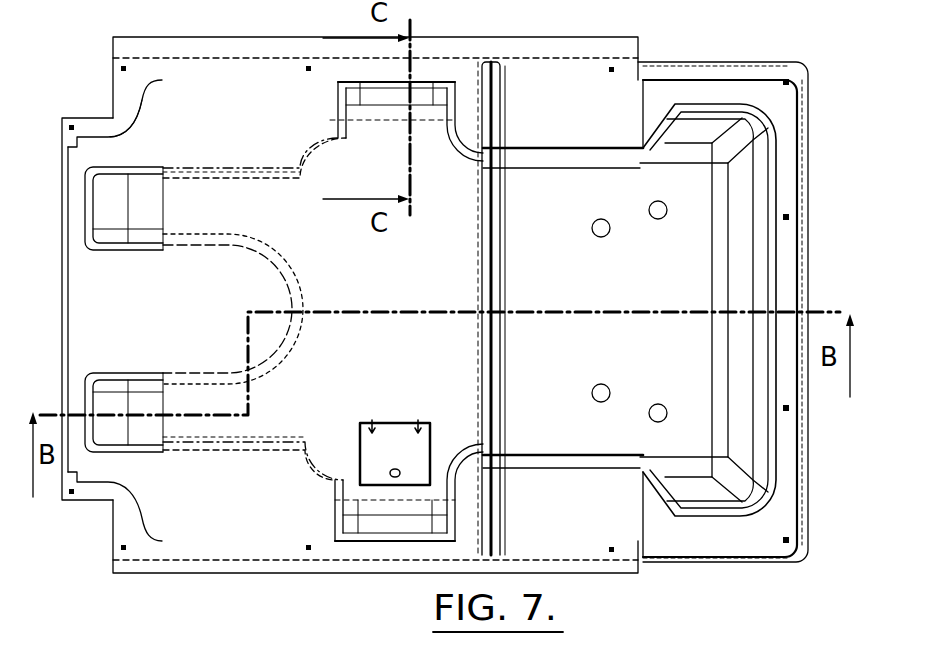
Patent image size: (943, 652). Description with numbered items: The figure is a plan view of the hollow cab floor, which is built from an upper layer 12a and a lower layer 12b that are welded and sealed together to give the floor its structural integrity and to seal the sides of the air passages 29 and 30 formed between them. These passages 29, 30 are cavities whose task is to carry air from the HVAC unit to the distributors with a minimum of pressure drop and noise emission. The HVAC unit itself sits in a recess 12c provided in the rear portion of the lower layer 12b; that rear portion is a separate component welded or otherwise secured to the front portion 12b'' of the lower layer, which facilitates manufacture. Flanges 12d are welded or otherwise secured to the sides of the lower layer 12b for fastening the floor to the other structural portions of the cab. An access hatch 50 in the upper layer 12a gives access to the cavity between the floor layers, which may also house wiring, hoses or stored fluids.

The upper layer 12a is at (160, 295).
The lower layer 12b is at (723, 330).
The front portion of the lower layer 12b'' is at (91, 336).
The recess 12c is at (665, 354).
The flanges 12d is at (201, 47).
The passage 29 is at (205, 208).
The passage 30 is at (372, 147).
The access hatch 50 is at (375, 443).